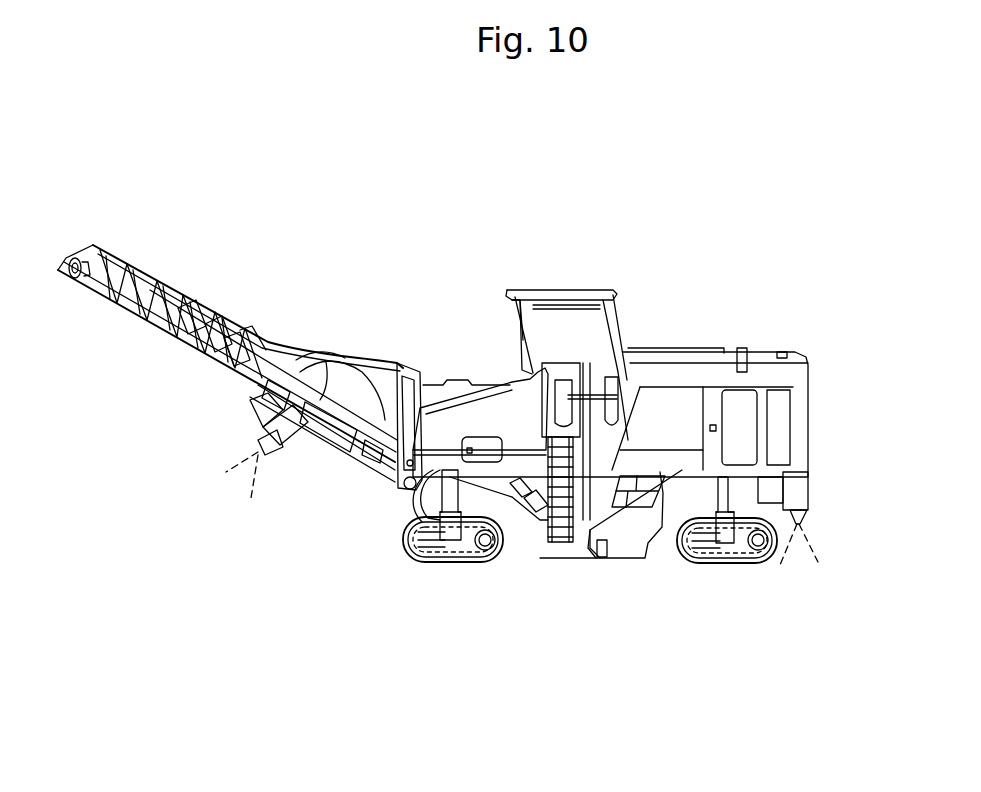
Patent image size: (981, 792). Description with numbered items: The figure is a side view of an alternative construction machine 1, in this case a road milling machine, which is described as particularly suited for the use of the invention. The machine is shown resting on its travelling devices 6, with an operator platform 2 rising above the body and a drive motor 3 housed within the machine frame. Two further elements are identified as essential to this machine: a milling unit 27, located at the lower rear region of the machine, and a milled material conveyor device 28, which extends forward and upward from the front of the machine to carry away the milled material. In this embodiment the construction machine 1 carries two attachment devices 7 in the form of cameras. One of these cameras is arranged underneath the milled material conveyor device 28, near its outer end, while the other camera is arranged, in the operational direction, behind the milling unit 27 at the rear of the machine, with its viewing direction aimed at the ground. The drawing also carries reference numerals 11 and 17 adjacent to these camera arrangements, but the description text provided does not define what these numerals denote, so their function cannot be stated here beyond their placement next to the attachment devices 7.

The construction machine 1 is at (670, 327).
The operator platform 2 is at (284, 433).
The drive motor 3 is at (698, 407).
The travelling devices 6 is at (447, 553).
The attachment devices 7 is at (803, 490).
The detection area 11 is at (257, 480).
The holder 17 is at (258, 410).
The milling unit 27 is at (600, 550).
The milled material conveyor device 28 is at (173, 330).